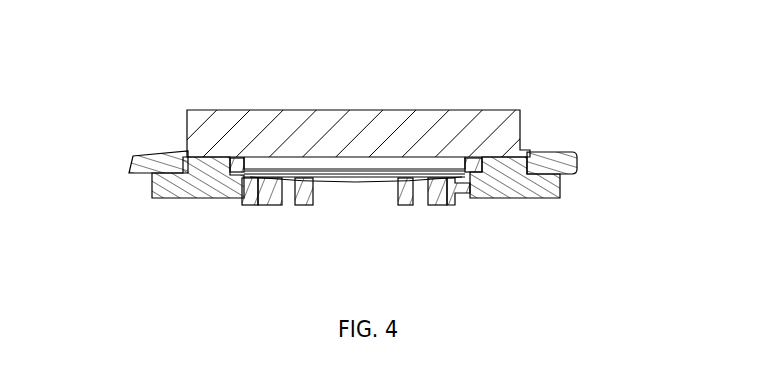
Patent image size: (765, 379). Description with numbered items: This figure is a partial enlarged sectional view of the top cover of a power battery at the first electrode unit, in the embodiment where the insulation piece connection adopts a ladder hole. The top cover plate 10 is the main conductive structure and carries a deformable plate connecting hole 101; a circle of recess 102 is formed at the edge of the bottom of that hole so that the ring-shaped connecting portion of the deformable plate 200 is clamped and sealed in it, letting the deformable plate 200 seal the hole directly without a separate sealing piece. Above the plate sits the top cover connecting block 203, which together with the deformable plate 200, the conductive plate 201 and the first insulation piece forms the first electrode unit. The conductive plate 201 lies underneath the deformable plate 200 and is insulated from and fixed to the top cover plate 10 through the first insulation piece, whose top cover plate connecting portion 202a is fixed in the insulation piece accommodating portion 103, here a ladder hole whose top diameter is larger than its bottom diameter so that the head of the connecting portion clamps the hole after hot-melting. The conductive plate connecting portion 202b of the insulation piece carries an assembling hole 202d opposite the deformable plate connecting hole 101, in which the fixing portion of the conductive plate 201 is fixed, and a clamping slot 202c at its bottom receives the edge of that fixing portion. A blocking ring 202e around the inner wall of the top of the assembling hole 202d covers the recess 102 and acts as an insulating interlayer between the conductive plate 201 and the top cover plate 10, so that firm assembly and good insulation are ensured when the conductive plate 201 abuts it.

The top cover plate 10 is at (153, 153).
The deformable plate connecting hole 101 is at (388, 165).
The recess 102 is at (470, 158).
The insulation piece accommodating portion 103 is at (155, 200).
The deformable plate 200 is at (337, 183).
The conductive plate 201 is at (250, 199).
The top cover plate connecting portion 202a is at (203, 152).
The conductive plate connecting portion 202b is at (560, 198).
The clamping slot 202c is at (465, 194).
The assembling hole 202d is at (288, 200).
The blocking ring 202e is at (457, 204).
The top cover connecting block 203 is at (232, 110).